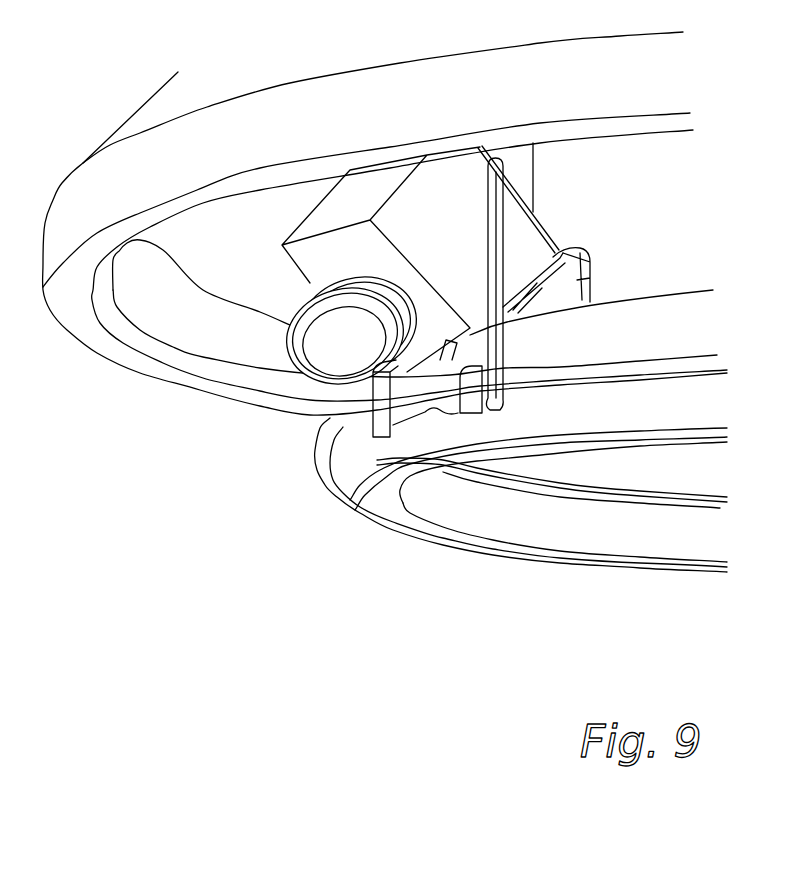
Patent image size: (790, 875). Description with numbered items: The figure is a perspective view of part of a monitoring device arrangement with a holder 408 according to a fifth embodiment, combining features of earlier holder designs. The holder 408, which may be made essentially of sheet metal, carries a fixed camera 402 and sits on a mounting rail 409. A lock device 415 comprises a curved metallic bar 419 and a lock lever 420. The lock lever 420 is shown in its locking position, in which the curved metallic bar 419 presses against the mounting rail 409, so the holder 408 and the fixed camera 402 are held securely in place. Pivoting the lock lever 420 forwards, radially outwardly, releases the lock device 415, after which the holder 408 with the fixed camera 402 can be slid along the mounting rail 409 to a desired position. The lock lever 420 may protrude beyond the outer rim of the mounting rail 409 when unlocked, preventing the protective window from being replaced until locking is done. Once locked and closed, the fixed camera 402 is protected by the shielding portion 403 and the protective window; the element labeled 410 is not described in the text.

The fixed camera 402 is at (292, 323).
The shielding portion 403 is at (153, 112).
The holder 408 is at (566, 236).
The mounting rail 409 is at (677, 367).
The ring flange 410 is at (497, 413).
The lock device 415 is at (447, 415).
The curved metallic bar 419 is at (393, 430).
The lock lever 420 is at (503, 228).